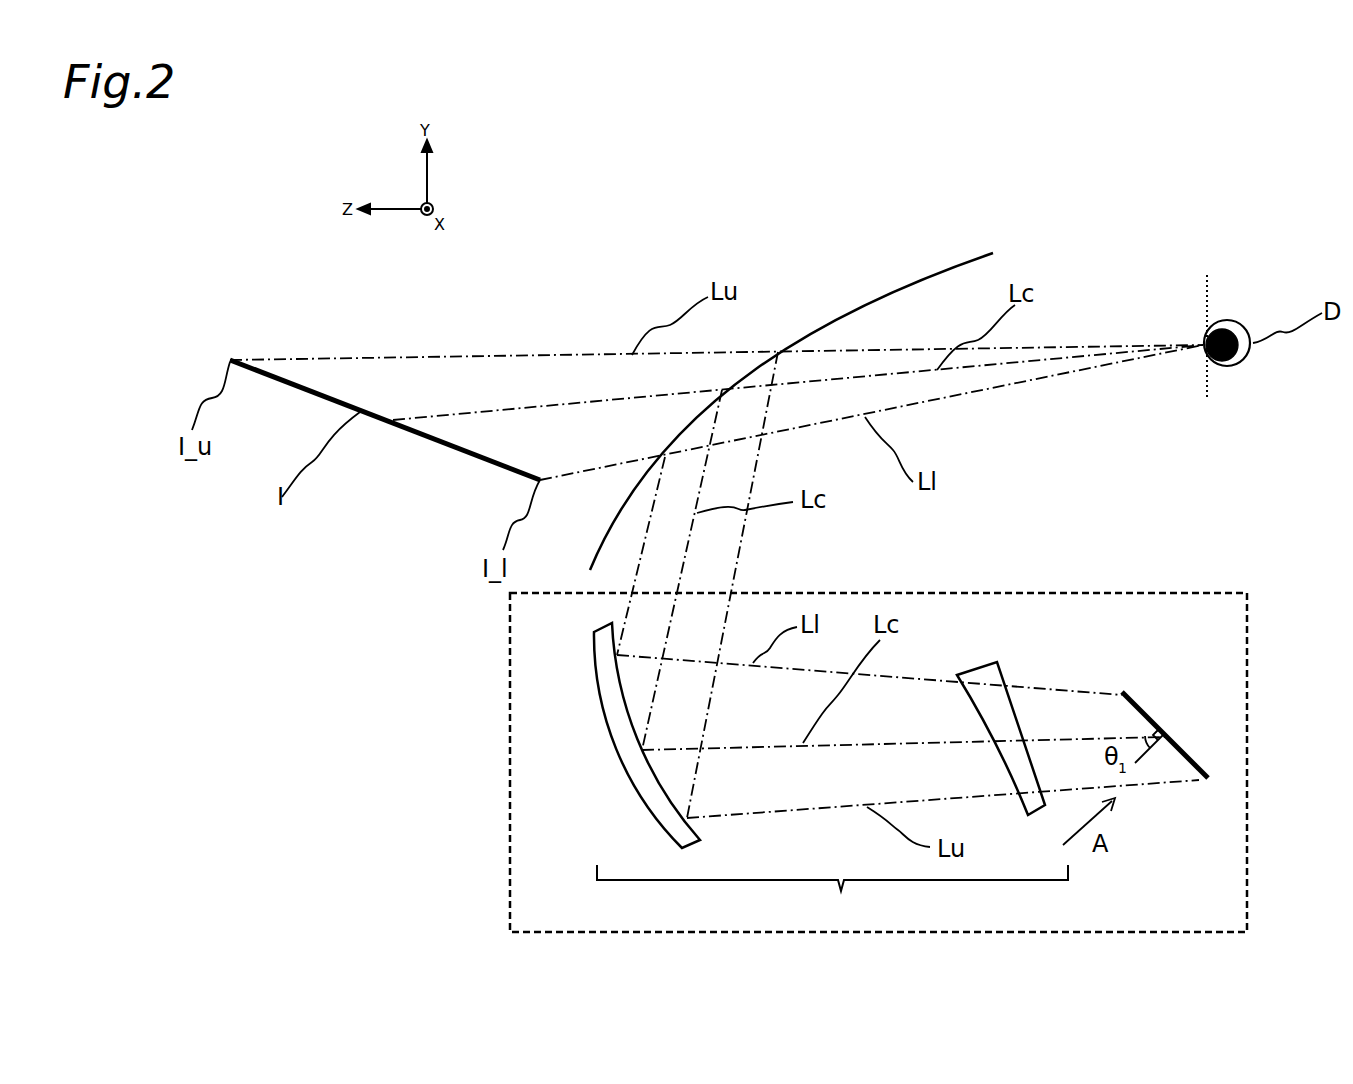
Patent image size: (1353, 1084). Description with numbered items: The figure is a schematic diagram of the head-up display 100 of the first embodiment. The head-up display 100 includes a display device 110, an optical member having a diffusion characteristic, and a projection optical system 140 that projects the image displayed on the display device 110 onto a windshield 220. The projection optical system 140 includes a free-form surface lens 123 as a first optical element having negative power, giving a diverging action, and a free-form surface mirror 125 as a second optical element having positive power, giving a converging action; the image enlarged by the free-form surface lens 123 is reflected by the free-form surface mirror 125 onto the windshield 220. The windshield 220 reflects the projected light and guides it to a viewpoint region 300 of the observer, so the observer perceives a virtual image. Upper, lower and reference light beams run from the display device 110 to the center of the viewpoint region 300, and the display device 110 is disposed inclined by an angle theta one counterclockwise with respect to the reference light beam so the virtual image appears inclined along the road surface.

The head-up display 100 is at (1247, 610).
The display device 110 is at (1148, 717).
The free-form surface lens 123 is at (1000, 672).
The free-form surface mirror 125 is at (603, 708).
The projection optical system 140 is at (832, 898).
The windshield 220 is at (900, 288).
The viewpoint region 300 is at (1207, 308).